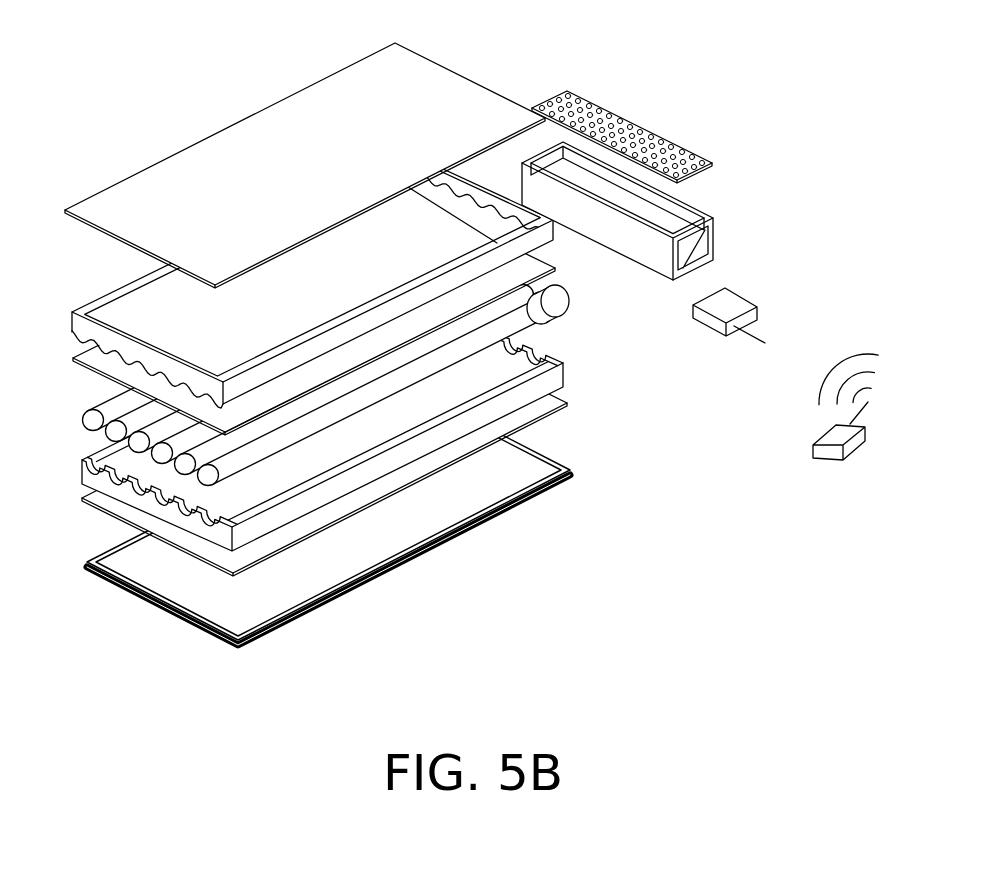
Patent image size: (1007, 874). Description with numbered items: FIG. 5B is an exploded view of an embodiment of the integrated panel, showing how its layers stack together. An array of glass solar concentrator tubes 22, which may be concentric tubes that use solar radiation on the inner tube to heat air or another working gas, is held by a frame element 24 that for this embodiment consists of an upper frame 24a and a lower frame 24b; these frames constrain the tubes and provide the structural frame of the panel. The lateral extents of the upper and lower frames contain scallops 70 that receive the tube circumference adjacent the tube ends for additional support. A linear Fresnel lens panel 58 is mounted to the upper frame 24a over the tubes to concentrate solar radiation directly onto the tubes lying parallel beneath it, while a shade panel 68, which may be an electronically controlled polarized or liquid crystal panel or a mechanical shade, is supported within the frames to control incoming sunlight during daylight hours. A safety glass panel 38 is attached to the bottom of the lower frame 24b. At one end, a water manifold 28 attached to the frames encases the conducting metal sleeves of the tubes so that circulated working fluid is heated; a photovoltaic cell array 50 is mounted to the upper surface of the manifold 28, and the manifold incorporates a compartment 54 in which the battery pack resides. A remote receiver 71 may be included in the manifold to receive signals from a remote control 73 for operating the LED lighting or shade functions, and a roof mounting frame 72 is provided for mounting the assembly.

The linear Fresnel lens panel 58 is at (273, 103).
The photovoltaic cell array 50 is at (570, 97).
The compartment 54 is at (678, 218).
The water manifold 28 is at (717, 223).
The remote receiver 71 is at (745, 297).
The shade panel 68 is at (553, 263).
The frame element 24 is at (560, 300).
The glass solar concentrator tubes 22 is at (530, 312).
The upper frame 24a is at (107, 294).
The lower frame 24b is at (558, 378).
The safety glass panel 38 is at (560, 402).
The roof mounting frame 72 is at (533, 497).
The remote control 73 is at (828, 453).
The scallops 70 is at (205, 387).